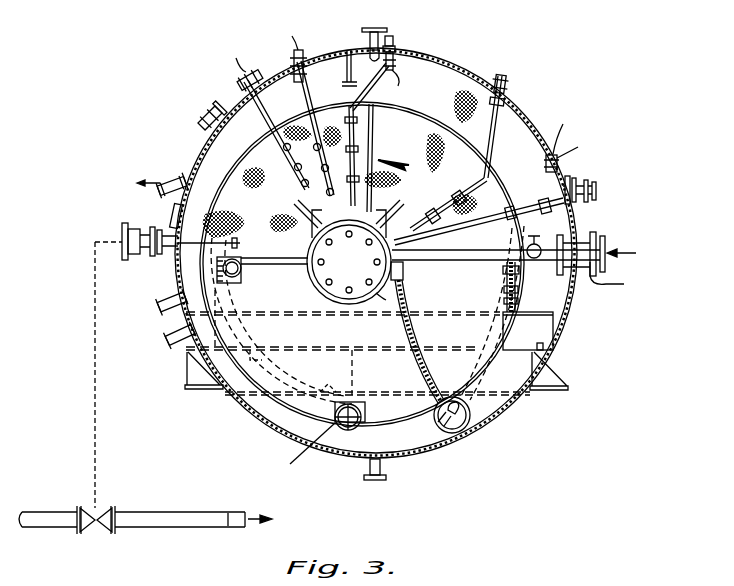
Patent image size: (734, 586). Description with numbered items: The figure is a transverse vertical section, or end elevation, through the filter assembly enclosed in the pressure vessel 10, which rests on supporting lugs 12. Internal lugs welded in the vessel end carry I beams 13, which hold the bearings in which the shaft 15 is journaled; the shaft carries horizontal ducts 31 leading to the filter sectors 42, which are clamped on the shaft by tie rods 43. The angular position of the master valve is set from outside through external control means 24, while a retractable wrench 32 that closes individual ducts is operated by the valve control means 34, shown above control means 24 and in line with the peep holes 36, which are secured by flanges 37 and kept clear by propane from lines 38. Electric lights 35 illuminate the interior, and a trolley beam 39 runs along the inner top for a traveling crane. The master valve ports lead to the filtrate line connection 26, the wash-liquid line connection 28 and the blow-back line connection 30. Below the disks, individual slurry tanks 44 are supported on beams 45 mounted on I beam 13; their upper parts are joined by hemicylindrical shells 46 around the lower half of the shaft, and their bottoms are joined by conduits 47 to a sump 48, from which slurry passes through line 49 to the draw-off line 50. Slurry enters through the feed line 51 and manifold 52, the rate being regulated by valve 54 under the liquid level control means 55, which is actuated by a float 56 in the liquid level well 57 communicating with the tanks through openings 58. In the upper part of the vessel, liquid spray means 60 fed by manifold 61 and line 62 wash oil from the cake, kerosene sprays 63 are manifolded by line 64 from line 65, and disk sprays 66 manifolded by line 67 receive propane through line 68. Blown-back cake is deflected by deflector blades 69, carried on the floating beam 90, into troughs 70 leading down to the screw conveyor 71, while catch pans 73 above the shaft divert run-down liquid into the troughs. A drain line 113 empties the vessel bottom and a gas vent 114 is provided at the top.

The pressure vessel 10 is at (532, 392).
The lugs 12 is at (186, 380).
The I beams 13 is at (552, 310).
The shaft 15 is at (322, 284).
The external control means 24 is at (605, 224).
The filtrate line connection 26 is at (176, 344).
The wash-liquid line connection 28 is at (166, 294).
The blow-back line connection 30 is at (212, 104).
The horizontal ducts 31 is at (349, 237).
The retractable wrench 32 is at (519, 208).
The valve control means 34 is at (598, 190).
The electric lights 35 is at (359, 68).
The peep holes 36 is at (172, 210).
The flanges 37 is at (566, 166).
The propane lines 38 is at (563, 130).
The trolley beam 39 is at (345, 84).
The filter sectors 42 is at (422, 132).
The tie rods 43 is at (362, 160).
The tanks 44 is at (518, 282).
The beams 45 is at (517, 296).
The hemicylindrical shells 46 is at (389, 302).
The conduits 47 is at (310, 453).
The sump 48 is at (360, 436).
The line 49 is at (354, 374).
The draw-off line 50 is at (168, 175).
The feed line 51 is at (619, 279).
The manifold 52 is at (572, 230).
The valve 54 is at (100, 512).
The liquid level control means 55 is at (126, 224).
The float 56 is at (250, 284).
The liquid level well 57 is at (265, 326).
The openings 58 is at (258, 364).
The liquid spray means 60 is at (280, 136).
The manifold 61 is at (298, 90).
The line 62 is at (244, 74).
The sprays 63 is at (362, 97).
The line 64 is at (408, 82).
The line 65 is at (391, 36).
The disk sprays 66 is at (482, 182).
The line 67 is at (496, 112).
The line 68 is at (498, 66).
The deflector blades 69 is at (404, 262).
The troughs 70 is at (414, 340).
The screw conveyor 71 is at (470, 430).
The catch pans 73 is at (298, 214).
The floating beam 90 is at (462, 260).
The drain line 113 is at (367, 465).
The gas vent 114 is at (366, 40).